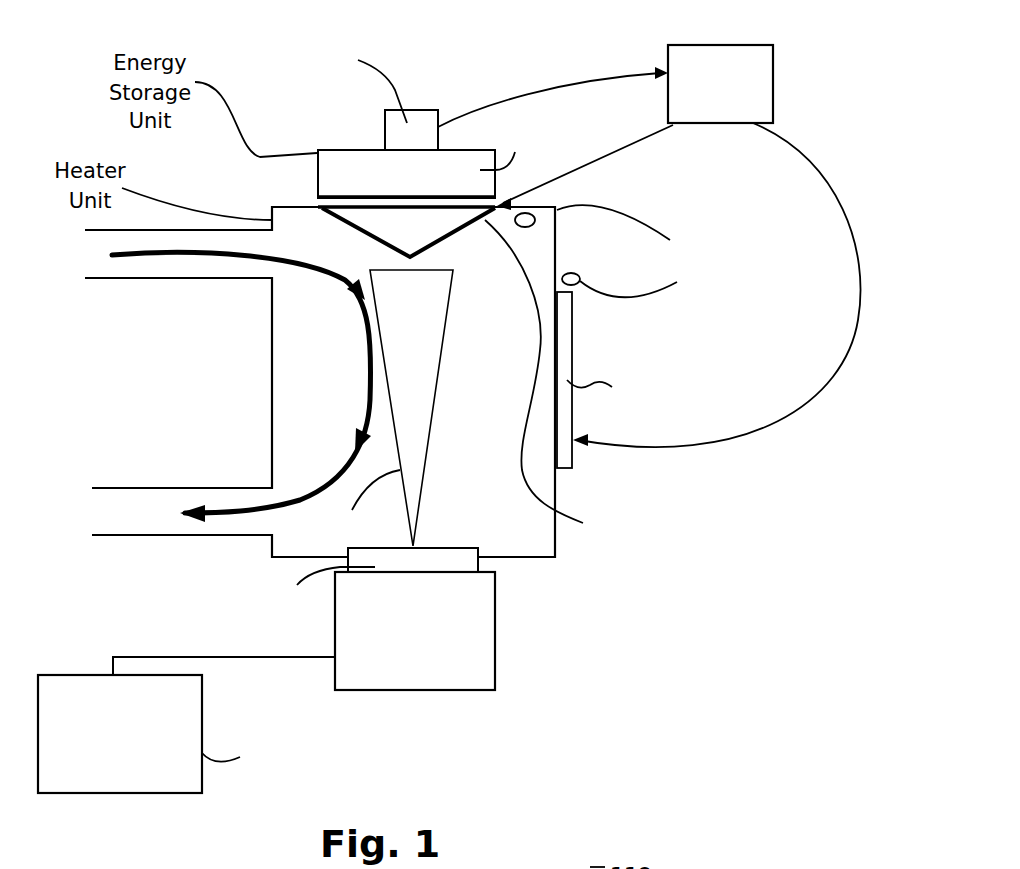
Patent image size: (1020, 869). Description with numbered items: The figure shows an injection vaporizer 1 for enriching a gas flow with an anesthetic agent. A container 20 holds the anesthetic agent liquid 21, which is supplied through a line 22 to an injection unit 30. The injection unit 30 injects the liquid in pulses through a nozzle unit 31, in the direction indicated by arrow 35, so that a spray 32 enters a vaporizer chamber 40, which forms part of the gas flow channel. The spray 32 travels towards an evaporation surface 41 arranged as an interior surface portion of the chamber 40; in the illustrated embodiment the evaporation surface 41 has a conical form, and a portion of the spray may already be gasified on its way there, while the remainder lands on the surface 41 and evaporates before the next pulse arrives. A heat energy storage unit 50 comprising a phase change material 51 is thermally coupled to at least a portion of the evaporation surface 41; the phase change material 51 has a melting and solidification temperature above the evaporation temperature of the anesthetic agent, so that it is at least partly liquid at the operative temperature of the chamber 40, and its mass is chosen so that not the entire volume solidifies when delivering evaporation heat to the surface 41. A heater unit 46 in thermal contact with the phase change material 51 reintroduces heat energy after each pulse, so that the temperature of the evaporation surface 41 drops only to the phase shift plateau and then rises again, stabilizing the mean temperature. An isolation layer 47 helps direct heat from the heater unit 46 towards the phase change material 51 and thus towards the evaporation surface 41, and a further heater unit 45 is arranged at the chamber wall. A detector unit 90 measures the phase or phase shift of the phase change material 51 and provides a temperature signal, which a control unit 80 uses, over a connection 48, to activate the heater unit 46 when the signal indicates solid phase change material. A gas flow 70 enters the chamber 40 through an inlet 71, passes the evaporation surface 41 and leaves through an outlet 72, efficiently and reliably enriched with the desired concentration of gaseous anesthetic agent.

The injection vaporizer 1 is at (718, 604).
The container 20 is at (80, 675).
The anesthetic agent liquid 21 is at (182, 719).
The supply conduit 22 is at (153, 657).
The injection unit 30 is at (482, 612).
The nozzle unit 31 is at (480, 558).
The spray 32 is at (442, 394).
The injection direction 35 is at (538, 674).
The vaporizer chamber 40 is at (272, 385).
The evaporation surface 41 is at (470, 224).
The heater unit 45 is at (572, 330).
The heater unit 46 is at (318, 197).
The isolation layer 47 is at (535, 222).
The control line 48 is at (648, 142).
The heat energy storage unit 50 is at (318, 158).
The phase change material 51 is at (331, 166).
The gas flow 70 is at (333, 280).
The inlet 71 is at (157, 280).
The outlet 72 is at (120, 498).
The control unit 80 is at (773, 67).
The detector unit 90 is at (385, 115).